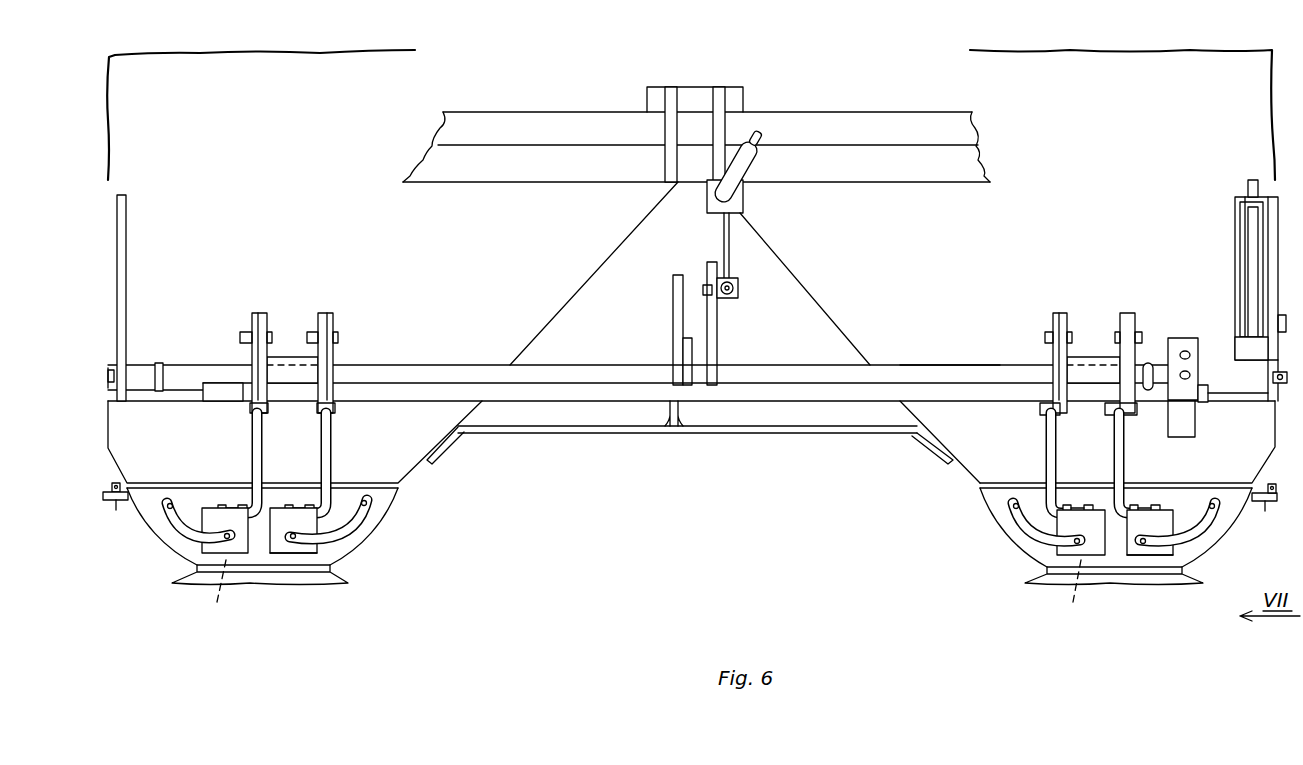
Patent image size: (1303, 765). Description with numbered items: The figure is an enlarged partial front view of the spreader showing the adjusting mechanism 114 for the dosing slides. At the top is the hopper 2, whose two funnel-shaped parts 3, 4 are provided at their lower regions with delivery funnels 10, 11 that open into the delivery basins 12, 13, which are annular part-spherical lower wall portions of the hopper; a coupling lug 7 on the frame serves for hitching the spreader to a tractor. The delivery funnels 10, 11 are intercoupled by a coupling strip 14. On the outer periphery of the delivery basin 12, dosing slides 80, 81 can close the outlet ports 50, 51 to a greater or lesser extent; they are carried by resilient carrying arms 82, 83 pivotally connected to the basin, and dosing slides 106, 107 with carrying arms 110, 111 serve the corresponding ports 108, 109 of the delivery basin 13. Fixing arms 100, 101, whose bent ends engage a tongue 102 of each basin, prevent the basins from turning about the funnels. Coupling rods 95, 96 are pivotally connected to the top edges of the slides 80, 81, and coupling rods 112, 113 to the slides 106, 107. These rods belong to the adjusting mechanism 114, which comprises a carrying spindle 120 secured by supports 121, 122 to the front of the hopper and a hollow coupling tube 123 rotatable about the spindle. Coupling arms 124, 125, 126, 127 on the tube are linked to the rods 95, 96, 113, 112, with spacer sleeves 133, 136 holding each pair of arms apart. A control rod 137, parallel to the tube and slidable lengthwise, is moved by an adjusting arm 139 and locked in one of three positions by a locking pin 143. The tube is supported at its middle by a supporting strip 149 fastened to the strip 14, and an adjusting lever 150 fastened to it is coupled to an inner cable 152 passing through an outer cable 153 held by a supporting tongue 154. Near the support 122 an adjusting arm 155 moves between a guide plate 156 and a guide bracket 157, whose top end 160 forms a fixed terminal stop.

The hopper 2 is at (279, 69).
The funnel-shaped part 3 is at (545, 268).
The funnel-shaped part 4 is at (830, 286).
The coupling lug 7 is at (720, 100).
The delivery funnel 10 is at (372, 394).
The delivery funnel 11 is at (957, 438).
The delivery basin 12 is at (305, 457).
The delivery basin 13 is at (972, 509).
The coupling strip 14 is at (515, 431).
The outlet port 50 is at (208, 596).
The outlet port 51 is at (278, 560).
The dosing slide 80 is at (210, 548).
The dosing slide 81 is at (300, 555).
The carrying arm 82 is at (168, 521).
The carrying arm 83 is at (340, 530).
The coupling rod 95 is at (255, 452).
The coupling rod 96 is at (330, 449).
The fixing arm 100 is at (112, 487).
The fixing arm 101 is at (1285, 495).
The tongue 102 is at (120, 508).
The dosing slide 106 is at (1165, 555).
The dosing slide 107 is at (1060, 560).
The port 108 is at (1130, 556).
The port 109 is at (1055, 591).
The carrying arm 110 is at (1195, 545).
The carrying arm 111 is at (1027, 523).
The coupling rod 112 is at (1115, 448).
The coupling rod 113 is at (1047, 437).
The adjusting mechanism 114 is at (962, 351).
The carrying spindle 120 is at (140, 370).
The support 121 is at (122, 258).
The support 122 is at (1262, 282).
The coupling tube 123 is at (185, 372).
The coupling arm 124 is at (257, 312).
The coupling arm 125 is at (330, 313).
The coupling arm 126 is at (1060, 313).
The coupling arm 127 is at (1132, 313).
The spacer sleeve 133 is at (290, 357).
The spacer sleeve 136 is at (1090, 356).
The control rod 137 is at (228, 393).
The adjusting arm 139 is at (1183, 417).
The locking pin 143 is at (1152, 360).
The supporting strip 149 is at (680, 349).
The adjusting lever 150 is at (716, 332).
The inner cable 152 is at (723, 240).
The outer cable 153 is at (748, 165).
The supporting tongue 154 is at (745, 205).
The adjusting arm 155 is at (1250, 255).
The guide plate 156 is at (1240, 207).
The guide bracket 157 is at (1268, 215).
The top end 160 is at (1243, 180).